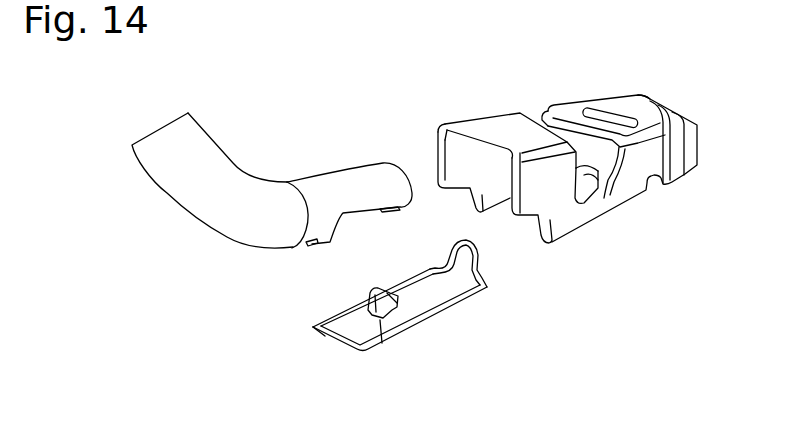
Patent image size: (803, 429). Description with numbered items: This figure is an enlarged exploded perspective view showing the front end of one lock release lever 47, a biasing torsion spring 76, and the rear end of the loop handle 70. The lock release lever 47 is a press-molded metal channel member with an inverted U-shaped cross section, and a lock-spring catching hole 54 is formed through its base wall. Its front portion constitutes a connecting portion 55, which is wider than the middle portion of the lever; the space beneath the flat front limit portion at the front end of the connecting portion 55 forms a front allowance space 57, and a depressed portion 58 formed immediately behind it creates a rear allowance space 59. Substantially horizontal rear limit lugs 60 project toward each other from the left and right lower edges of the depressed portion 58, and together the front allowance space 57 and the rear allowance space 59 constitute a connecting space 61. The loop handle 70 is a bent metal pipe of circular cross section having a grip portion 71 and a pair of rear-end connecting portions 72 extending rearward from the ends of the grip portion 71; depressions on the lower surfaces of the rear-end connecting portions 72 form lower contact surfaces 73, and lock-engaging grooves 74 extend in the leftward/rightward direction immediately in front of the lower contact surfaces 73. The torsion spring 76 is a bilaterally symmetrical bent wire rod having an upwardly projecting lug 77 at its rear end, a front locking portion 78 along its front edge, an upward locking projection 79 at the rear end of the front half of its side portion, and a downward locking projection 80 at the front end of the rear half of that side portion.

The lock release lever 47 is at (627, 108).
The lock-spring catching hole 54 is at (597, 110).
The connecting portion 55 is at (647, 97).
The front allowance space 57 is at (473, 172).
The depressed portion 58 is at (650, 127).
The rear allowance space 59 is at (541, 118).
The rear limit lugs 60 is at (608, 185).
The connecting space 61 is at (572, 130).
The loop handle 70 is at (178, 193).
The grip portion 71 is at (208, 163).
The rear-end connecting portions 72 is at (348, 185).
The lower contact surfaces 73 is at (383, 210).
The lock-engaging grooves 74 is at (310, 244).
The torsion spring 76 is at (413, 317).
The upwardly projecting lug 77 is at (478, 242).
The front locking portion 78 is at (338, 343).
The locking projection 79 is at (400, 293).
The locking projection 80 is at (380, 343).